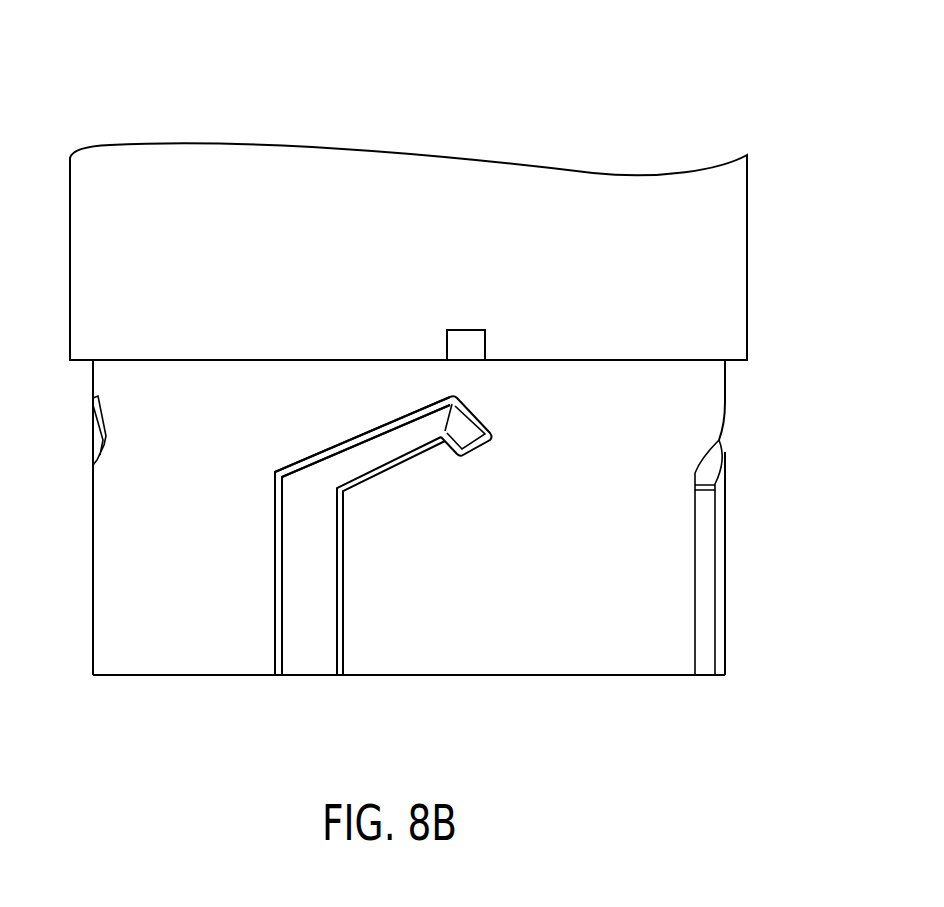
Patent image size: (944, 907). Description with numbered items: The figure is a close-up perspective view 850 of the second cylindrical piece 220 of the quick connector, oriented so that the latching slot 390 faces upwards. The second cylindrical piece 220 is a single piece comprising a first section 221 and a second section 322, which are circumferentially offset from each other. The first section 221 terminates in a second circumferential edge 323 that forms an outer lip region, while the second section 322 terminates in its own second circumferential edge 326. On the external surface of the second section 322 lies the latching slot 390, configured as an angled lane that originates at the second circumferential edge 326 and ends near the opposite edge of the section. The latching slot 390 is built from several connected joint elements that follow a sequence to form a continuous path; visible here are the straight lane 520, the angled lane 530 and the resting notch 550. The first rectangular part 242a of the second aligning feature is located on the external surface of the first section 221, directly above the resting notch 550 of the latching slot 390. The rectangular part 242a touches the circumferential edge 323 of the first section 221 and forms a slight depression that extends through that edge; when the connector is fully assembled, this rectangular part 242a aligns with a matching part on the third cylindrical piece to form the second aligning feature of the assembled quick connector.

The close-up perspective view 850 is at (112, 94).
The second cylindrical piece 220 is at (468, 251).
The first section 221 is at (186, 267).
The first rectangular part 242a is at (472, 348).
The second section 322 is at (430, 557).
The second circumferential edge 323 is at (735, 363).
The second circumferential edge 326 is at (632, 677).
The latching slot 390 is at (373, 523).
The angled lane 530 is at (375, 450).
The resting notch 550 is at (467, 432).
The straight lane 520 is at (320, 587).